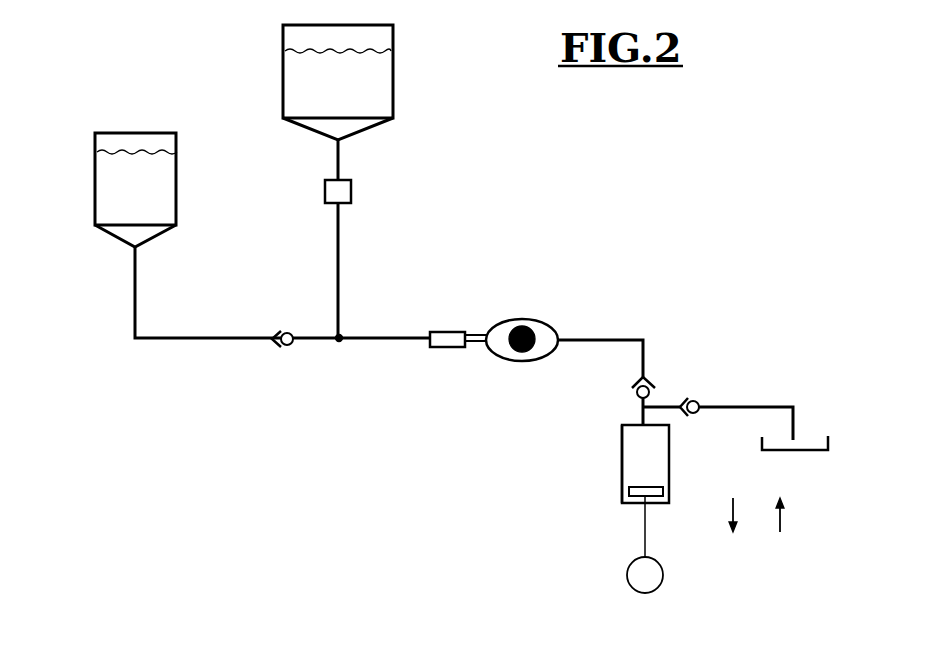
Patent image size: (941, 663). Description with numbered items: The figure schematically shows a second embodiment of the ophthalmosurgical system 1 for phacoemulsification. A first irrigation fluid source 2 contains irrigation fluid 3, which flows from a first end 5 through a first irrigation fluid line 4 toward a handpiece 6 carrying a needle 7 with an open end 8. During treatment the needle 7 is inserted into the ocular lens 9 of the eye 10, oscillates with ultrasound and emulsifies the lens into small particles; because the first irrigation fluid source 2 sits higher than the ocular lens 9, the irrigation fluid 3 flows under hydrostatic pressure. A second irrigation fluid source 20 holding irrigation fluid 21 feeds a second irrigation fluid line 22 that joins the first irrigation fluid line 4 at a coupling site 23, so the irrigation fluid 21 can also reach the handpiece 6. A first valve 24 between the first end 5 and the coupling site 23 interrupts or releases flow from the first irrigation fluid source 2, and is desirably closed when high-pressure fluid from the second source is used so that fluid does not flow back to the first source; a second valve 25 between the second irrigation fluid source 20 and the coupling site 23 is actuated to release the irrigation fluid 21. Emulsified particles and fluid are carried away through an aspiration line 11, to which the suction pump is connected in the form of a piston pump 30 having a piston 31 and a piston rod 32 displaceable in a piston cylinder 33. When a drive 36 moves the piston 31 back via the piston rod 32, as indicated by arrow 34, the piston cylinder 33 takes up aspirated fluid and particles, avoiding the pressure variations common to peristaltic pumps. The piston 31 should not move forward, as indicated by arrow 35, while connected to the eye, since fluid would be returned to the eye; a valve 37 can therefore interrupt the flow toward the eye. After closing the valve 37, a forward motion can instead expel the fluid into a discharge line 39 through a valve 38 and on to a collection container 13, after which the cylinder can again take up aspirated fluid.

The ophthalmosurgical system 1 is at (663, 203).
The first irrigation fluid source 2 is at (96, 178).
The irrigation fluid 3 is at (106, 213).
The first irrigation fluid line 4 is at (170, 340).
The first end 5 is at (134, 247).
The handpiece 6 is at (440, 349).
The needle 7 is at (467, 348).
The open end 8 is at (491, 348).
The ocular lens 9 is at (531, 329).
The eye 10 is at (553, 321).
The aspiration line 11 is at (632, 340).
The collection container 13 is at (830, 445).
The second irrigation fluid source 20 is at (394, 35).
The irrigation fluid 21 is at (380, 80).
The second irrigation fluid line 22 is at (340, 157).
The coupling site 23 is at (341, 337).
The first valve 24 is at (278, 347).
The second valve 25 is at (352, 191).
The piston pump 30 is at (670, 461).
The piston 31 is at (628, 490).
The piston rod 32 is at (645, 527).
The piston cylinder 33 is at (628, 438).
The arrow 34 is at (735, 513).
The arrow 35 is at (782, 521).
The drive 36 is at (627, 575).
The valve 37 is at (653, 385).
The valve 38 is at (700, 400).
The discharge line 39 is at (795, 420).